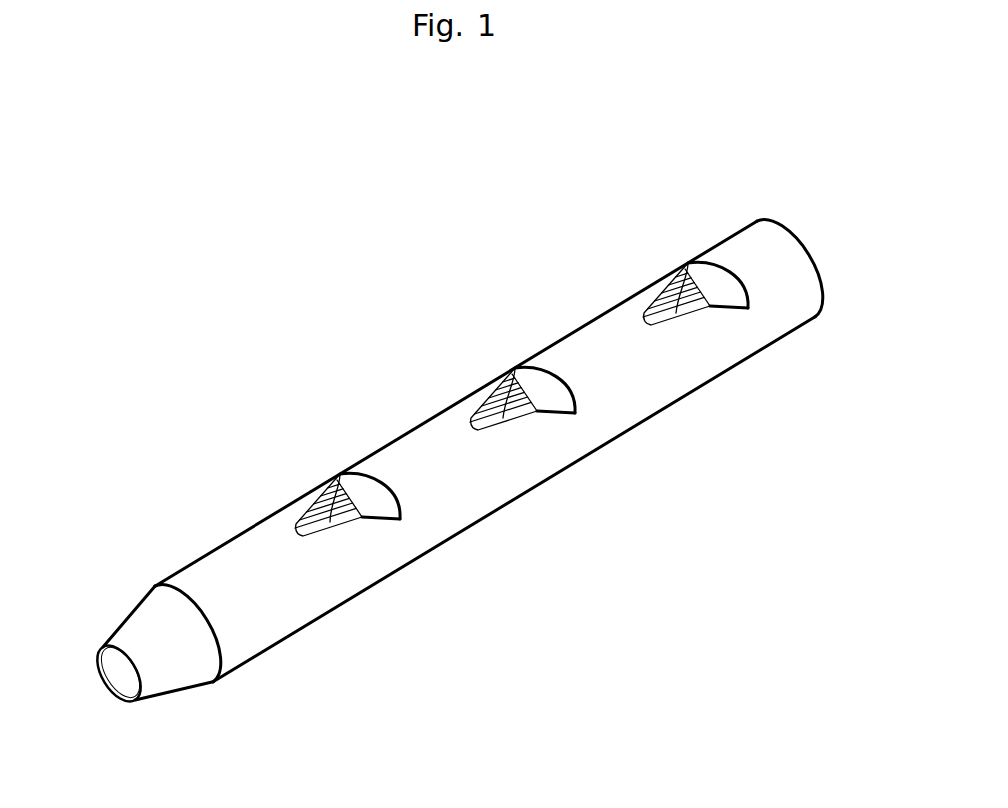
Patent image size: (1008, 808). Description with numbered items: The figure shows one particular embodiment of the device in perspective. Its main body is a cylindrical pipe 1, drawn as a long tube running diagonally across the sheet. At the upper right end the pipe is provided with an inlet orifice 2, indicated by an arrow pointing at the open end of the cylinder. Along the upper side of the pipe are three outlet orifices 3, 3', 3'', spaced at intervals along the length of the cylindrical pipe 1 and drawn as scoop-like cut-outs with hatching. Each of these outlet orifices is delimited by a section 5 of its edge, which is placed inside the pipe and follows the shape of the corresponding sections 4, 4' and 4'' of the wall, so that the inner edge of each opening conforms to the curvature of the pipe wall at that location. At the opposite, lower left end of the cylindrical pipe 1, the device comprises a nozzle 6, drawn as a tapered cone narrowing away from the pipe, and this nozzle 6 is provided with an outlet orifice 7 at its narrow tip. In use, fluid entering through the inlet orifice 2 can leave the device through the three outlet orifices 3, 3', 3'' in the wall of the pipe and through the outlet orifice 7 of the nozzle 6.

The cylindrical pipe 1 is at (732, 360).
The inlet orifice 2 is at (814, 246).
The outlet orifice 3 is at (695, 250).
The outlet orifice 3' is at (520, 355).
The outlet orifice 3'' is at (346, 460).
The section of the wall 4 is at (690, 373).
The section of the wall 4' is at (520, 477).
The section of the wall 4'' is at (348, 581).
The section of the edge 5 is at (537, 405).
The nozzle 6 is at (185, 678).
The outlet orifice 7 is at (115, 677).